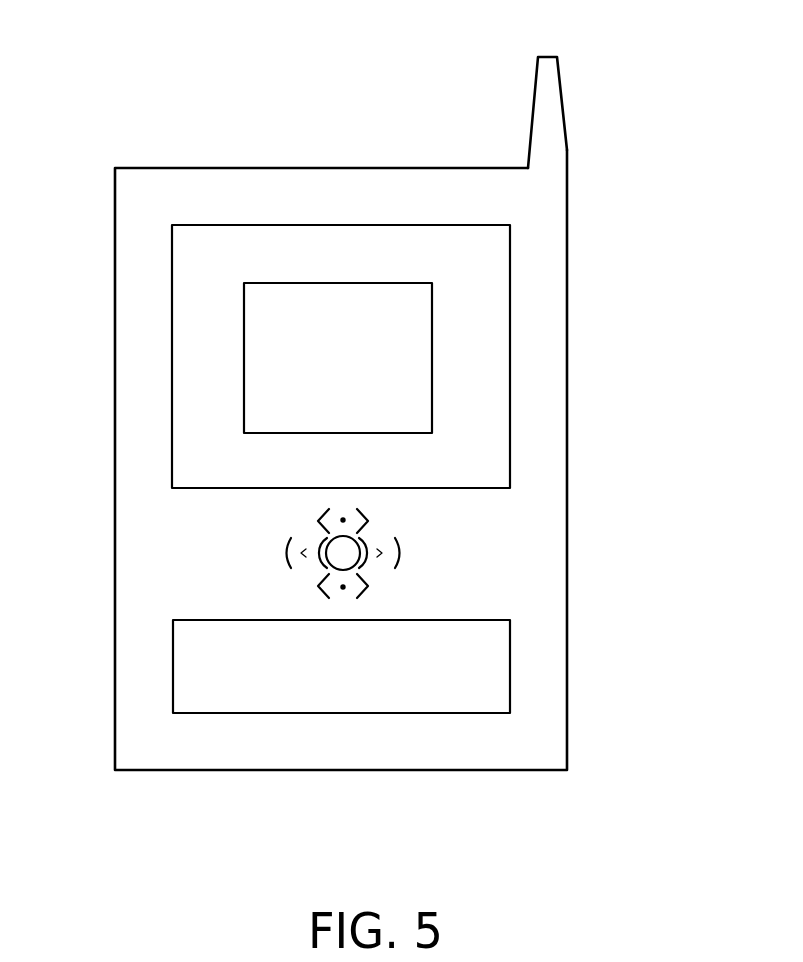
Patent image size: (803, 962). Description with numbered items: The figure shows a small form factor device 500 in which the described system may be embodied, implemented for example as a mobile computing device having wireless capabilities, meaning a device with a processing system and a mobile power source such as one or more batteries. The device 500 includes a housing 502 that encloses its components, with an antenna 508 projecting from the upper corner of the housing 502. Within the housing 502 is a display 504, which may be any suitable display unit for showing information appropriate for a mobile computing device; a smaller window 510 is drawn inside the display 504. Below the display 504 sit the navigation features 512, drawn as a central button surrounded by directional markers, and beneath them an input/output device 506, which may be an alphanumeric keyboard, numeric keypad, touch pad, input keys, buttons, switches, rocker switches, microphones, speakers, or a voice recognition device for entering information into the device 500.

The small form factor device 500 is at (129, 67).
The housing 502 is at (567, 468).
The display 504 is at (510, 243).
The input/output (I/O) device 506 is at (510, 657).
The antenna 508 is at (533, 107).
The display window 510 is at (433, 375).
The navigation features 512 is at (420, 543).